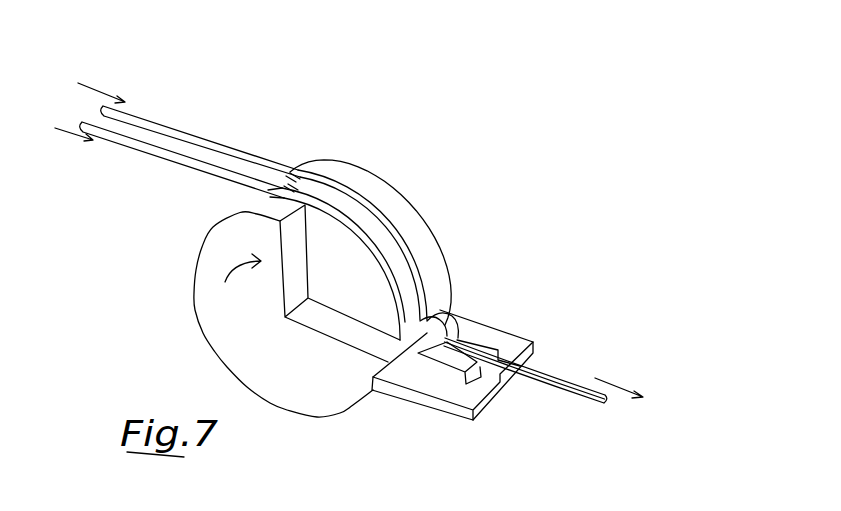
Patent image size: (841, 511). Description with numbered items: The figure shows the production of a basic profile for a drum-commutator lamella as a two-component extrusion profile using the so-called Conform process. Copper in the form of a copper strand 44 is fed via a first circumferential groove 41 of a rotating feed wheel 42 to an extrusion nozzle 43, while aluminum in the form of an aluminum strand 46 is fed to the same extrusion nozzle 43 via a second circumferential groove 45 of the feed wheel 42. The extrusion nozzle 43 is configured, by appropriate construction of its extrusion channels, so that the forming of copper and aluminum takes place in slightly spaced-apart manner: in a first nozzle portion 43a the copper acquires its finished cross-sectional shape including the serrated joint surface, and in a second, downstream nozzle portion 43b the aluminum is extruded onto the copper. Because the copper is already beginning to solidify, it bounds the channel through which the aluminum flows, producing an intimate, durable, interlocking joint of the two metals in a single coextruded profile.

The first circumferential groove 41 is at (280, 177).
The feed wheel 42 is at (225, 327).
The extrusion nozzle 43 is at (526, 304).
The first nozzle portion 43a is at (467, 312).
The second nozzle portion 43b is at (462, 369).
The copper strand 44 is at (162, 127).
The second circumferential groove 45 is at (273, 187).
The aluminum strand 46 is at (141, 148).